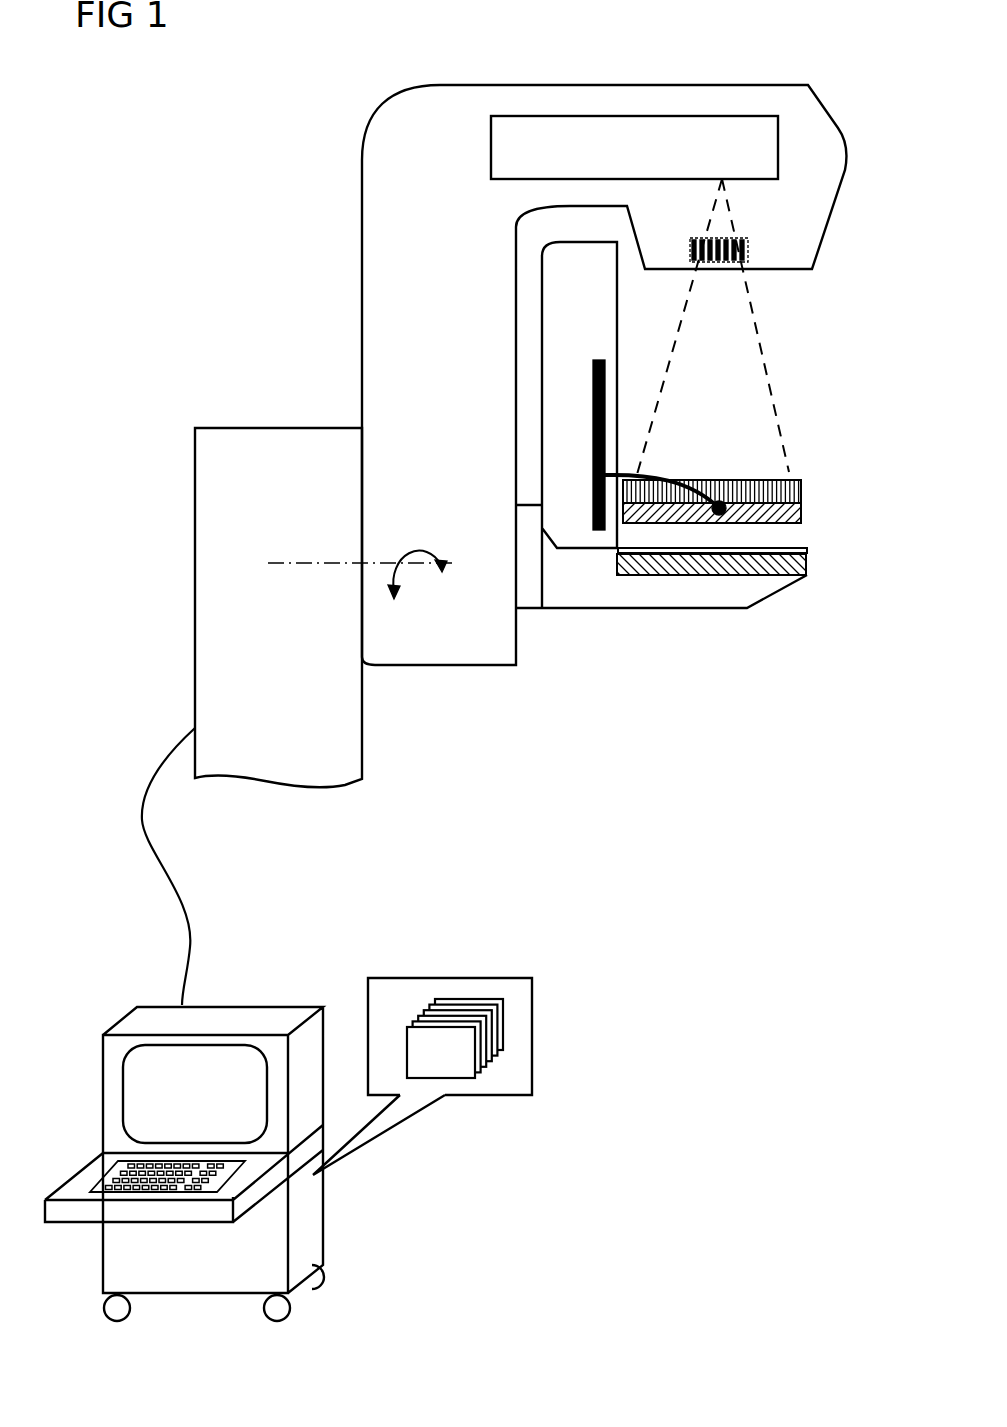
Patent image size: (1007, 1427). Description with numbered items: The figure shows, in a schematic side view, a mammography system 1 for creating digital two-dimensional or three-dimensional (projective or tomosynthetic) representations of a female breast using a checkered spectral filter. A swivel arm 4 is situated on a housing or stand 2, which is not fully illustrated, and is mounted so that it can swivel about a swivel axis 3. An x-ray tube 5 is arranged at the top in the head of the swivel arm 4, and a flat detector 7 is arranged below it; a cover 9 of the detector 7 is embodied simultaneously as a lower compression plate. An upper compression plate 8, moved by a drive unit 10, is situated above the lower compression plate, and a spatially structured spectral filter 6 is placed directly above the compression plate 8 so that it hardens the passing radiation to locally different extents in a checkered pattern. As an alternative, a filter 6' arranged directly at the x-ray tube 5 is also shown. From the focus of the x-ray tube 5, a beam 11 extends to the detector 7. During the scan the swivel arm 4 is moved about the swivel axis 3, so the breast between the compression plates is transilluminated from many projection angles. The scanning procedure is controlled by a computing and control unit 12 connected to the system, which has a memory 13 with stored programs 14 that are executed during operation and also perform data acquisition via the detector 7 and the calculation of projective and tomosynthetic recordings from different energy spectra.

The mammography system 1 is at (272, 200).
The housing/stand 2 is at (195, 505).
The swivel axis 3 is at (305, 563).
The swivel arm 4 is at (362, 345).
The x-ray tube 5 is at (632, 116).
The spatially structured spectral filter 6 is at (741, 481).
The filter 6' is at (749, 241).
The detector 7 is at (797, 563).
The upper compression plate 8 is at (805, 512).
The cover/lower compression plate 9 is at (800, 548).
The drive unit of the upper compression plate 10 is at (622, 308).
The beam 11 is at (766, 357).
The computing and control unit 12 is at (117, 1018).
The memory 13 is at (459, 978).
The programs 14 is at (458, 1078).